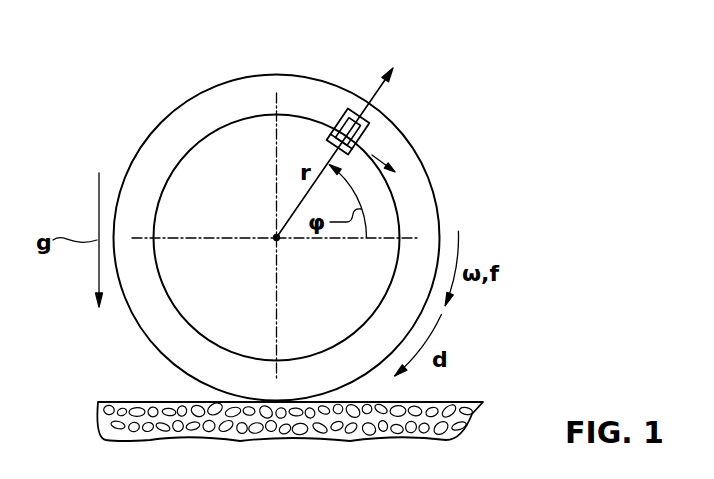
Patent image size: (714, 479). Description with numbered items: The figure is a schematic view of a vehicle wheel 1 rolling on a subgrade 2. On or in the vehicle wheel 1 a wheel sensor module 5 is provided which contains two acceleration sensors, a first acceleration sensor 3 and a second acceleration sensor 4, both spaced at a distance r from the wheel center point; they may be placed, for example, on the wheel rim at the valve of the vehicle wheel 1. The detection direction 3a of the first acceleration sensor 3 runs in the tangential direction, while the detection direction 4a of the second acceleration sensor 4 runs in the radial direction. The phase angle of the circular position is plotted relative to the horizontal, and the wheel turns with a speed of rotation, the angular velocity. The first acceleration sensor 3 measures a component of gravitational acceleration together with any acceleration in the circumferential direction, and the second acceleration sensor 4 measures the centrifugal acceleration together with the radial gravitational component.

The vehicle wheel 1 is at (206, 90).
The subgrade 2 is at (477, 425).
The first acceleration sensor 3 is at (362, 139).
The detection direction of first acceleration sensor 3a is at (380, 149).
The second acceleration sensor 4 is at (370, 135).
The detection direction of second acceleration sensor 4a is at (369, 124).
The wheel sensor module 5 is at (338, 124).